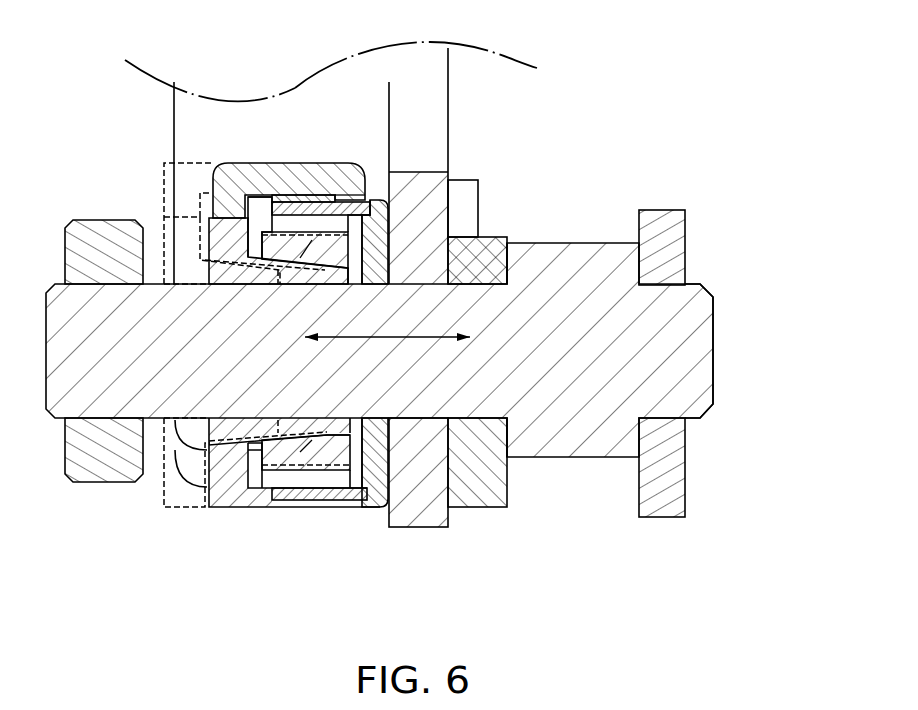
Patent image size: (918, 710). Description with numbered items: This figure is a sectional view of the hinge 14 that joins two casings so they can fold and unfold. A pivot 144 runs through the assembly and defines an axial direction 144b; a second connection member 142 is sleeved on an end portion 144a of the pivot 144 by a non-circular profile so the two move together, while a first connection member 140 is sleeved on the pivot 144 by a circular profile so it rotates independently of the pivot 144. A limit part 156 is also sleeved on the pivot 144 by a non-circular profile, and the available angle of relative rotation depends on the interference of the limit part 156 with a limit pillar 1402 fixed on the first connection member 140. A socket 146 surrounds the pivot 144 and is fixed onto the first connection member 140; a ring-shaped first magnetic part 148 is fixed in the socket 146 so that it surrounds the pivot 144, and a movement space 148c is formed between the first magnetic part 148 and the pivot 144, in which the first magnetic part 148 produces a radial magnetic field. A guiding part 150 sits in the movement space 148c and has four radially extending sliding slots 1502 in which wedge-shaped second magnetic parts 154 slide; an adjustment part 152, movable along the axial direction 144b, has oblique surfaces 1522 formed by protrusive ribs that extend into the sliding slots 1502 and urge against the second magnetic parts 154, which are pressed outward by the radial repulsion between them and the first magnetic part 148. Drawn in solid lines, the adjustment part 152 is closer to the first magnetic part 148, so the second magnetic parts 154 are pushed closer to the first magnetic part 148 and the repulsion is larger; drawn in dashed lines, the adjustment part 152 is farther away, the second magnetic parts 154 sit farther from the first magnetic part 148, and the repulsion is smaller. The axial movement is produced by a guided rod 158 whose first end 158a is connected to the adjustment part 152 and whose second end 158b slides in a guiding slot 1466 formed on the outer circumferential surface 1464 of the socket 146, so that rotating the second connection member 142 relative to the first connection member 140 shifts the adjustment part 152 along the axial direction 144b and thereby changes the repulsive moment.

The hinge 14 is at (648, 85).
The first connection member 140 is at (193, 120).
The limit pillar 1402 is at (463, 192).
The second connection member 142 is at (667, 510).
The pivot 144 is at (600, 268).
The end portion 144a is at (700, 363).
The axial direction 144b is at (500, 247).
The socket 146 is at (377, 480).
The first magnetic part 148 is at (270, 476).
The movement space 148c is at (250, 478).
The guiding part 150 is at (356, 470).
The sliding slots 1502 is at (330, 468).
The adjustment part 152 is at (212, 495).
The oblique surfaces 1522 is at (317, 437).
The second magnetic parts 154 is at (283, 458).
The limit part 156 is at (480, 495).
The guided rod 158 is at (240, 180).
The first end 158a is at (225, 197).
The second end 158b is at (358, 193).
The outer circumferential surface 1464 is at (302, 195).
The guiding slot 1466 is at (365, 195).